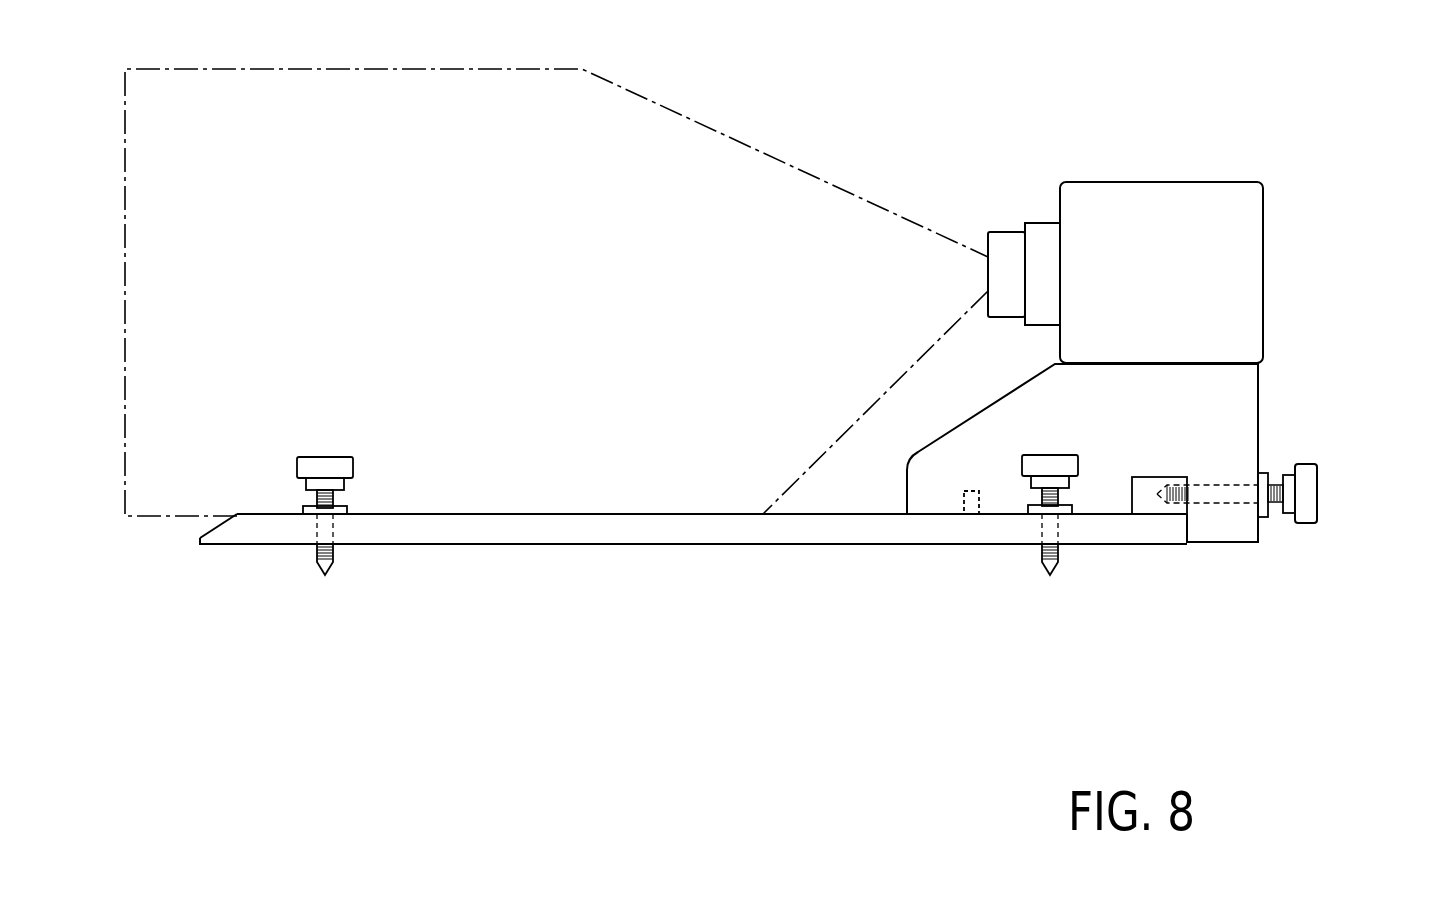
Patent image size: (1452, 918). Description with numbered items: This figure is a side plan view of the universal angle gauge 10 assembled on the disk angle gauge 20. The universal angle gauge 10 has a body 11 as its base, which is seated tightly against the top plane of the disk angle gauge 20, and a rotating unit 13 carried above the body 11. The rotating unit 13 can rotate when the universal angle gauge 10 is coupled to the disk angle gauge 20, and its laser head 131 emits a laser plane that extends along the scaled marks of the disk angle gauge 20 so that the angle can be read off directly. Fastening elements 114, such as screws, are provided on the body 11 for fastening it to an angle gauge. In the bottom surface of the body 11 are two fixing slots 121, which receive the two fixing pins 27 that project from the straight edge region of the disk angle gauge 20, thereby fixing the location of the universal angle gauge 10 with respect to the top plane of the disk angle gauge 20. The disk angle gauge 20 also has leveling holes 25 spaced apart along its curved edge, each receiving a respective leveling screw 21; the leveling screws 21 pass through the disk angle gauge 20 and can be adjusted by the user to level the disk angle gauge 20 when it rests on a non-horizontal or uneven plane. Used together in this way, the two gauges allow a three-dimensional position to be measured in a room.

The universal angle gauge 10 is at (1355, 247).
The body 11 is at (1258, 422).
The fastening element 114 is at (1312, 497).
The fixing slot 121 is at (963, 491).
The rotating unit 13 is at (1190, 202).
The laser head 131 is at (1005, 237).
The disk angle gauge 20 is at (465, 587).
The leveling screw 21 is at (313, 555).
The leveling hole 25 is at (333, 508).
The fixing pin 27 is at (970, 514).